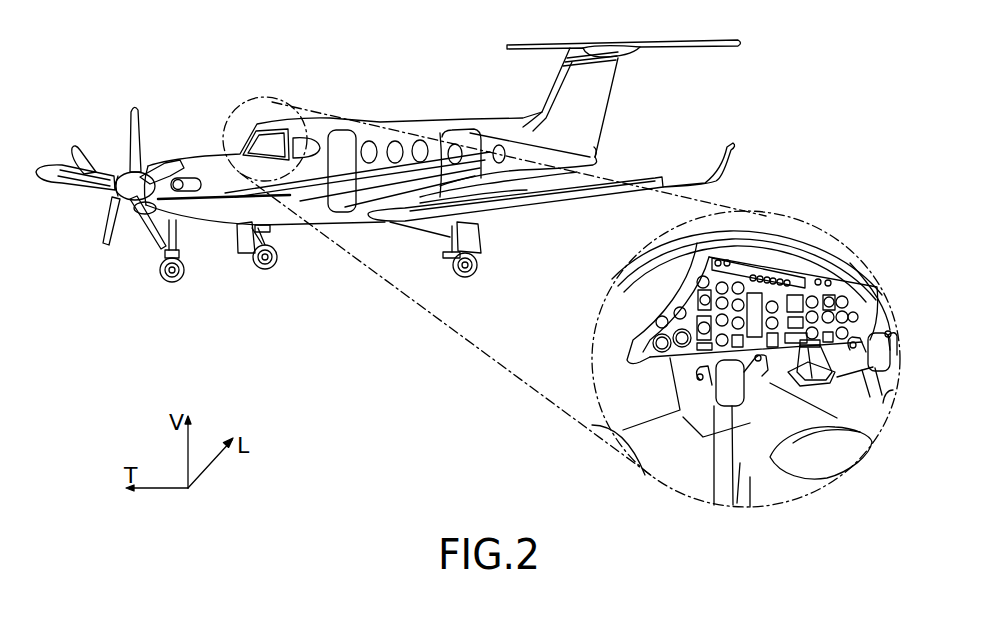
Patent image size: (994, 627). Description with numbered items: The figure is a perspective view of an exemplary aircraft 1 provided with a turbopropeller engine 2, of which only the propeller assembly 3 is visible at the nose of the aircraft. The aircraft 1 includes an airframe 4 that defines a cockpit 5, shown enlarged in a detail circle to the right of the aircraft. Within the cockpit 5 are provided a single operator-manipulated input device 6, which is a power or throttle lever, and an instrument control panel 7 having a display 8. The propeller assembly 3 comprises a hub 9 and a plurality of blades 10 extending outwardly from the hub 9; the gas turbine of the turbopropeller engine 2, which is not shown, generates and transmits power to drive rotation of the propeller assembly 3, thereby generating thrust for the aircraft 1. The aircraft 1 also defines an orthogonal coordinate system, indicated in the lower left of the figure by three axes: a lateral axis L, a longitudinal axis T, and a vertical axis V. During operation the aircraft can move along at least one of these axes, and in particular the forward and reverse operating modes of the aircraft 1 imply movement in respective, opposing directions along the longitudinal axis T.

The aircraft 1 is at (131, 297).
The turbopropeller engine 2 is at (185, 287).
The propeller assembly 3 is at (103, 256).
The airframe 4 is at (415, 121).
The cockpit 5 is at (705, 222).
The operator-manipulated input device 6 is at (788, 363).
The instrument control panel 7 is at (752, 272).
The display 8 is at (765, 300).
The hub 9 is at (122, 190).
The blades 10 is at (97, 158).